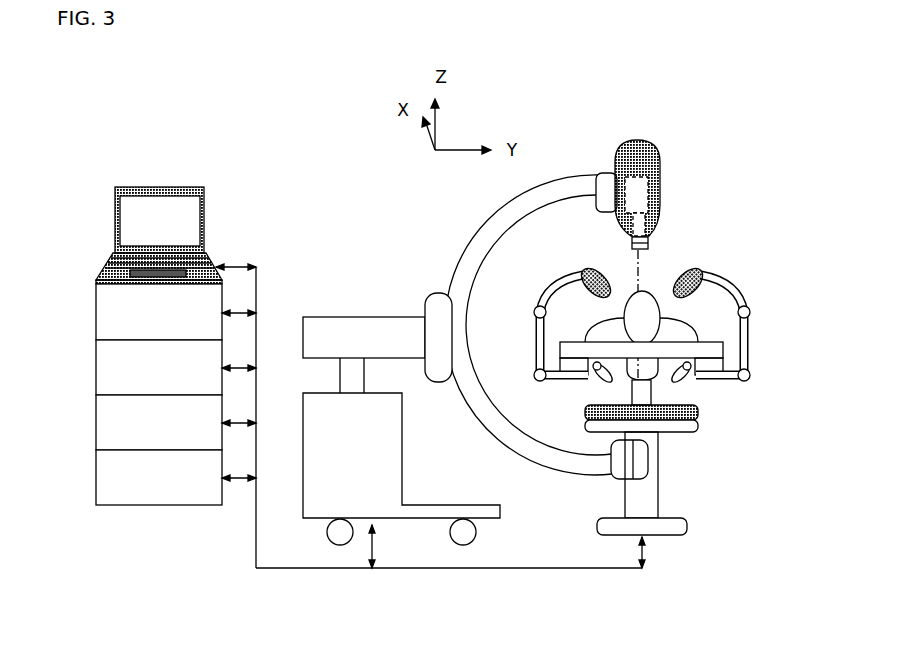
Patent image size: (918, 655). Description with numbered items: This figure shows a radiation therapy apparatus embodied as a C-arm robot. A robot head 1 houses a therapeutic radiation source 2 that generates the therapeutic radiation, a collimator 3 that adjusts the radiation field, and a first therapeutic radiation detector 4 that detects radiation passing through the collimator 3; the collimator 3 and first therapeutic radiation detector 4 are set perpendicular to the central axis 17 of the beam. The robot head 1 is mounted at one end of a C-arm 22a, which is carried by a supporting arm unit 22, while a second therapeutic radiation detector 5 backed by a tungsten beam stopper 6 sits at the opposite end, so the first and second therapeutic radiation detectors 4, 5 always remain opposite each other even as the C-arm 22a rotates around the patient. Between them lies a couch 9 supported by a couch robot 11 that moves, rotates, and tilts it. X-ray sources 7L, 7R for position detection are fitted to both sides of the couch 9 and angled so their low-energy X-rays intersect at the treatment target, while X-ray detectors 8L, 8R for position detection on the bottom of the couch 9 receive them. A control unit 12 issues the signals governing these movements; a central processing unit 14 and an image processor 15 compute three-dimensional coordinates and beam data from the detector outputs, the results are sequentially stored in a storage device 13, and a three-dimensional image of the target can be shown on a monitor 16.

The robot head 1 is at (655, 147).
The therapeutic radiation source 2 is at (648, 190).
The collimator 3 is at (650, 222).
The first therapeutic radiation detector 4 is at (651, 244).
The second therapeutic radiation detector 5 is at (698, 413).
The beam stopper 6 is at (673, 432).
The X-ray source for position detection 7L is at (584, 280).
The X-ray source for position detection 7R is at (715, 271).
The X-ray detector for position detection 8L is at (597, 383).
The X-ray detector for position detection 8R is at (684, 382).
The couch 9 is at (706, 342).
The couch robot 11 is at (640, 490).
The control unit 12 is at (96, 482).
The storage device 13 is at (96, 428).
The central processing unit 14 is at (96, 375).
The image processor 15 is at (96, 305).
The monitor 16 is at (204, 205).
The central axis 17 is at (630, 268).
The arm unit 22 is at (403, 317).
The C-arm 22a is at (468, 248).